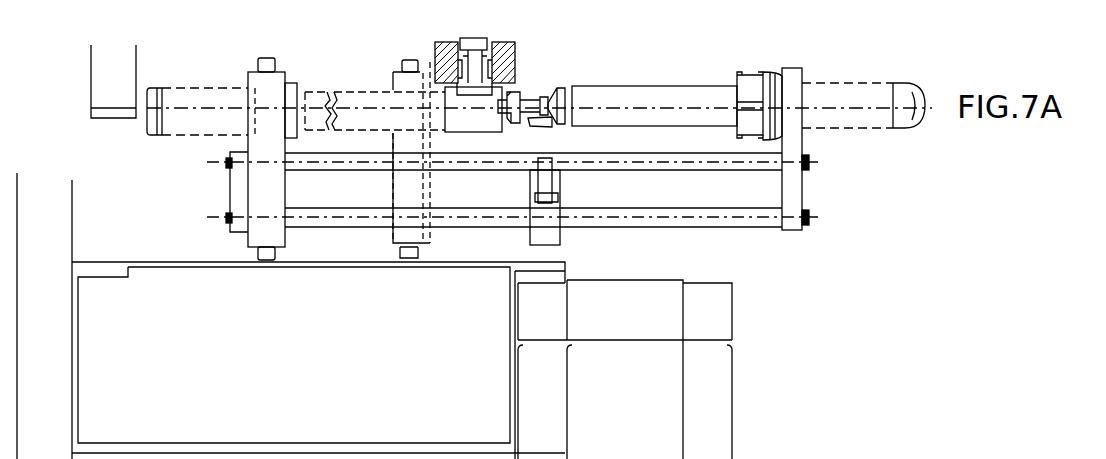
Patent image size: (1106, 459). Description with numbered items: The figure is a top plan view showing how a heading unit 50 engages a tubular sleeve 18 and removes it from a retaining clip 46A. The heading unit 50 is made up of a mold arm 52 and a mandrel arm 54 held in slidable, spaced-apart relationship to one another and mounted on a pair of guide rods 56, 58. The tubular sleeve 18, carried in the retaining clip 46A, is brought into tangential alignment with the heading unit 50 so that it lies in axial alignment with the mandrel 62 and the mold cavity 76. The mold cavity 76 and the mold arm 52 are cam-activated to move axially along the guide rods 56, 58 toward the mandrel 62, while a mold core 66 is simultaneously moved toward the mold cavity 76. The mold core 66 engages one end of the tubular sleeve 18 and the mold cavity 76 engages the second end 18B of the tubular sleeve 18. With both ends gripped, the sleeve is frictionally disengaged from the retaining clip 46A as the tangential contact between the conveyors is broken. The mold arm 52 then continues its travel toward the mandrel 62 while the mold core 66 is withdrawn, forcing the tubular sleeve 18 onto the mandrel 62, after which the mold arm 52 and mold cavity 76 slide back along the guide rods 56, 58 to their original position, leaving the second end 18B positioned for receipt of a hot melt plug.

The heading unit 50 is at (538, 146).
The mold arm 52 is at (255, 143).
The mandrel arm 54 is at (792, 185).
The guide rod 56 is at (336, 165).
The guide rod 58 is at (335, 222).
The mandrel 62 is at (672, 92).
The mold core 66 is at (562, 93).
The tubular sleeve 18 is at (521, 96).
The second end of tubular sleeve 18B is at (430, 62).
The retaining clip 46A is at (495, 100).
The mold cavity 76 is at (292, 92).